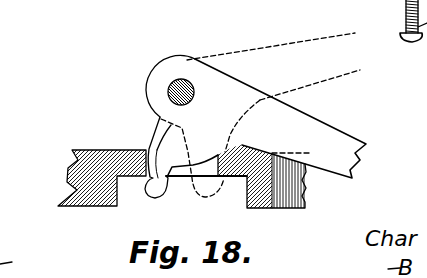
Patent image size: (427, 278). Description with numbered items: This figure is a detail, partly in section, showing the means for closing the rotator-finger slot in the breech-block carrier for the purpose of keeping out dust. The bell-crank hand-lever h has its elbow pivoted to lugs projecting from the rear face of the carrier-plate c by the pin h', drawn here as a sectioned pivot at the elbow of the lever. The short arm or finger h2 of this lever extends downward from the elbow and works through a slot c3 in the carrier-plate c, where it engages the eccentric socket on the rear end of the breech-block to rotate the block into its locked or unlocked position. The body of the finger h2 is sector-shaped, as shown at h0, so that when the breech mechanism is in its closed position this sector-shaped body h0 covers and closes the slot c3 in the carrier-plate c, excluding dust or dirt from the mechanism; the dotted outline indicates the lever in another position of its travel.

The bell-crank hand-lever h is at (256, 115).
The pin h' is at (181, 61).
The short arm or finger h2 is at (150, 158).
The sector-shaped body of the finger h0 is at (193, 151).
The carrier-plate c is at (67, 173).
The slot c3 is at (182, 177).